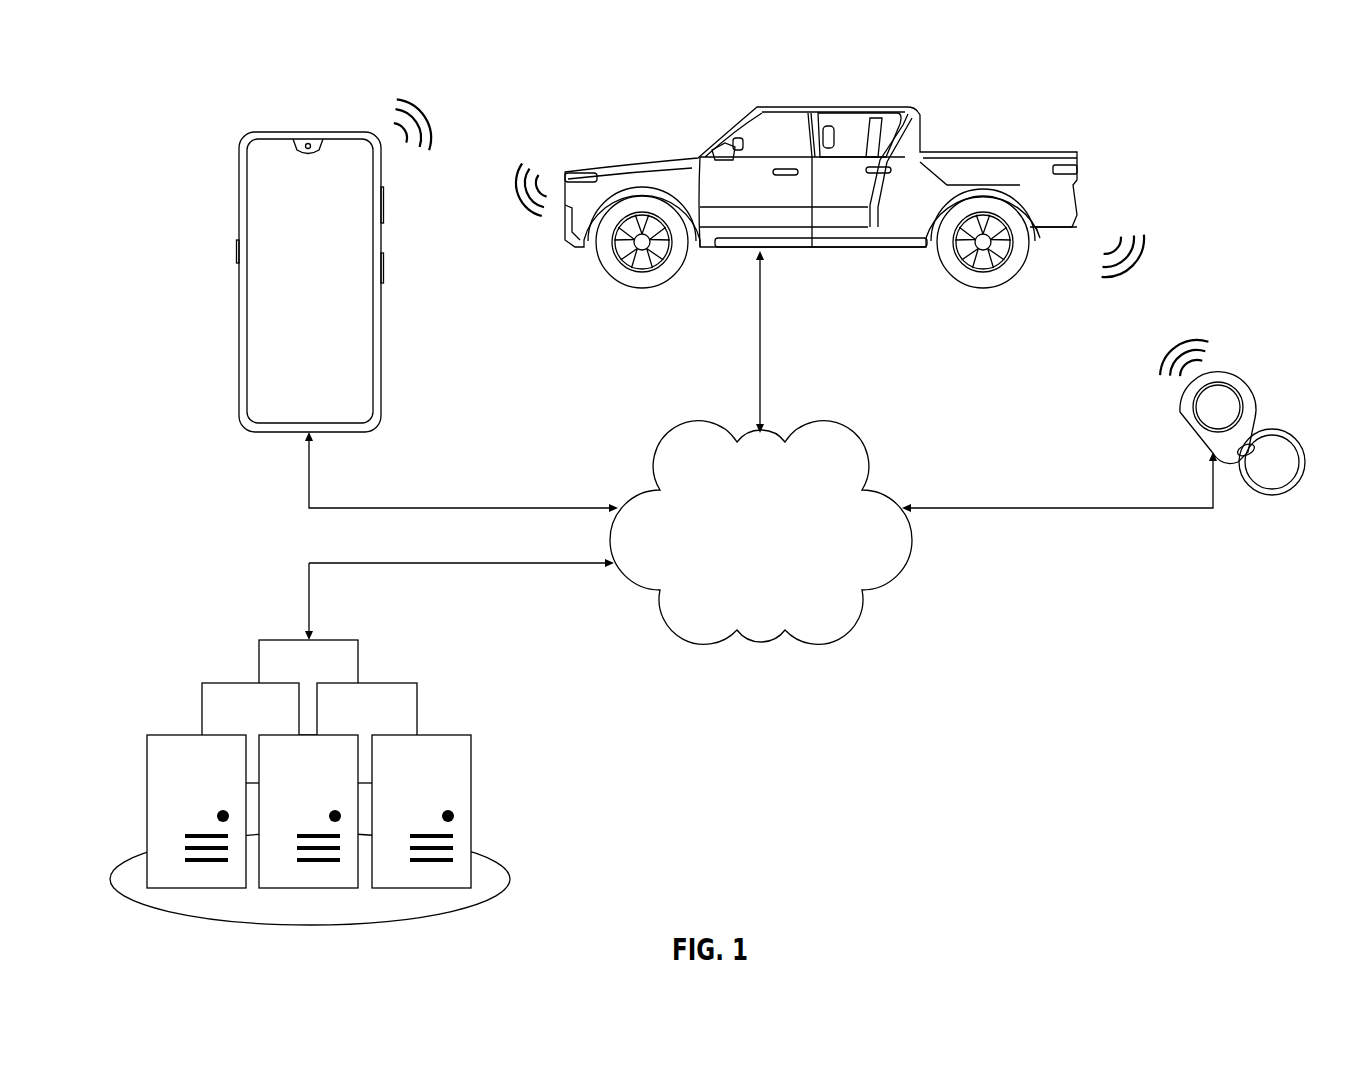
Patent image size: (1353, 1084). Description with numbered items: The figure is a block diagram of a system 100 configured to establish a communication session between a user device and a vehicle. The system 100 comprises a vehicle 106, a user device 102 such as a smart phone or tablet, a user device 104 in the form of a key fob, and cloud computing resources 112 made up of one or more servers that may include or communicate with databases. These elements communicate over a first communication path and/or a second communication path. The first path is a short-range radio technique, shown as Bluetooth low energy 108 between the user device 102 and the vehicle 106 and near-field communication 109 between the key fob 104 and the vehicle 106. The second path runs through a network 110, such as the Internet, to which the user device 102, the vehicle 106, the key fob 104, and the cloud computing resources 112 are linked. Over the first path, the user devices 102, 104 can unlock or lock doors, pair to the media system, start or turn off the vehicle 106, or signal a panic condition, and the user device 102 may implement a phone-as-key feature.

The system 100 is at (160, 74).
The user device 102 is at (277, 132).
The user device 104 is at (1250, 420).
The vehicle 106 is at (848, 105).
The Bluetooth low energy 108 is at (423, 122).
The near-field communication 109 is at (1180, 345).
The network 110 is at (690, 440).
The cloud computing resources 112 is at (288, 640).